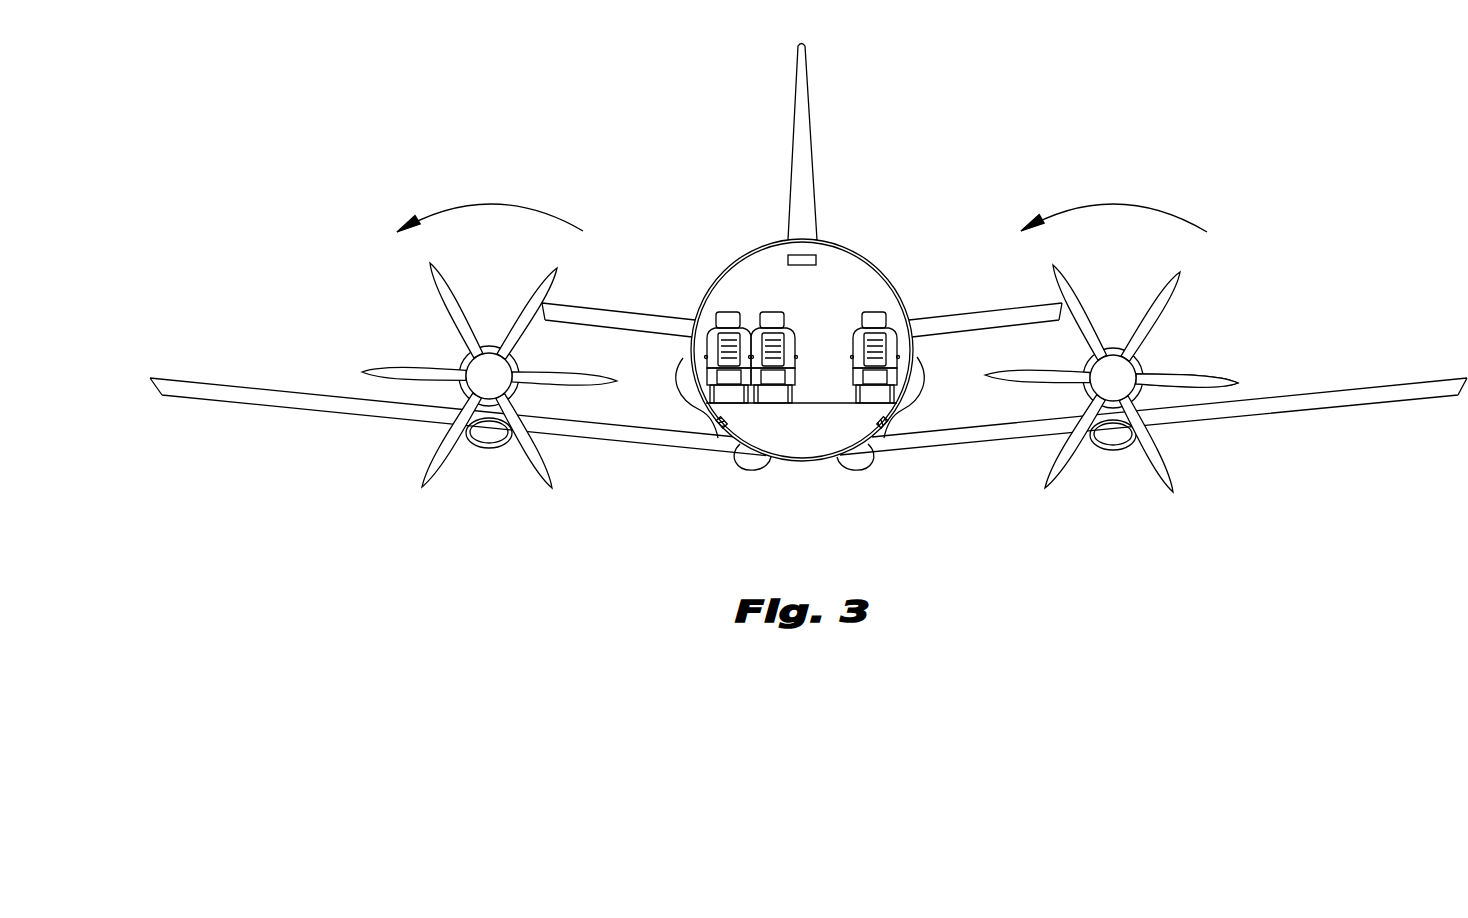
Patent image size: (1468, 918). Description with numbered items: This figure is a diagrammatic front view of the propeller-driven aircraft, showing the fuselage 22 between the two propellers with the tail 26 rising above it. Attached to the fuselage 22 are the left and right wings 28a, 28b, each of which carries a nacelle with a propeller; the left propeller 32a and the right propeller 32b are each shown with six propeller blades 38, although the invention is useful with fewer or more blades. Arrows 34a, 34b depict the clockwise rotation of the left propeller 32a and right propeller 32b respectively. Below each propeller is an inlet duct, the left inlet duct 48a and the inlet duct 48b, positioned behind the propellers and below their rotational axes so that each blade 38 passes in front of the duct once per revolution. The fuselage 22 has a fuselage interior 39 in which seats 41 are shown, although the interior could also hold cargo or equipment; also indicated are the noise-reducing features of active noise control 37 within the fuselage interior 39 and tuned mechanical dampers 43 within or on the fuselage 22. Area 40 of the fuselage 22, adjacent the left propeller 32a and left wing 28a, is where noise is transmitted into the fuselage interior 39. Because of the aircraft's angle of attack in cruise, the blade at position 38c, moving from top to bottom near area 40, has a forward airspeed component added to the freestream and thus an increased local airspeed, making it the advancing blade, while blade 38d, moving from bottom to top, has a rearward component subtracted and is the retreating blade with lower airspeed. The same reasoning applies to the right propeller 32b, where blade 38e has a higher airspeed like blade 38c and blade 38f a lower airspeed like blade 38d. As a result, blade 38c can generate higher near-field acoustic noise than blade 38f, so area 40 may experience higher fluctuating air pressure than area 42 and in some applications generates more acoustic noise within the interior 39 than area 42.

The fuselage 22 is at (845, 245).
The tail 26 is at (797, 77).
The left wing 28a is at (1385, 387).
The right wing 28b is at (212, 384).
The left propeller 32a is at (1148, 460).
The right propeller 32b is at (458, 450).
The arrow 34a is at (1120, 204).
The arrow 34b is at (490, 203).
The active noise control 37 is at (804, 255).
The propeller blade 38 is at (1197, 372).
The propeller blade 38c is at (1020, 389).
The propeller blade 38d is at (1226, 392).
The propeller blade 38e is at (400, 388).
The propeller blade 38f is at (573, 370).
The fuselage interior 39 is at (767, 287).
The area 40 is at (898, 425).
The seats 41 is at (730, 335).
The area 42 is at (712, 420).
The tuned mechanical dampers 43 is at (727, 424).
The left inlet duct 48a is at (1112, 450).
The inlet duct 48b is at (510, 450).